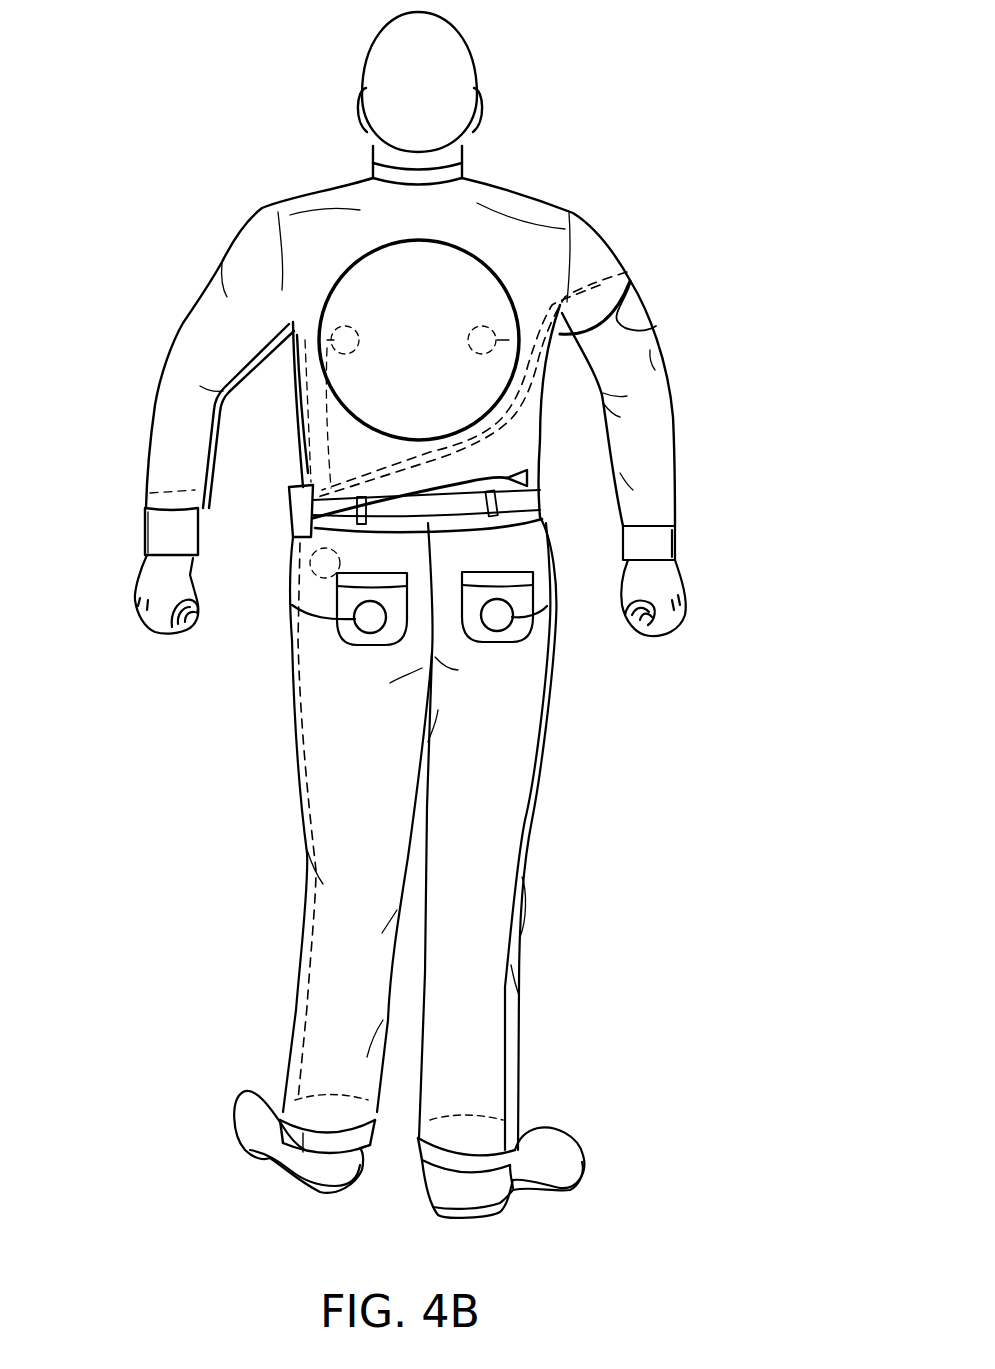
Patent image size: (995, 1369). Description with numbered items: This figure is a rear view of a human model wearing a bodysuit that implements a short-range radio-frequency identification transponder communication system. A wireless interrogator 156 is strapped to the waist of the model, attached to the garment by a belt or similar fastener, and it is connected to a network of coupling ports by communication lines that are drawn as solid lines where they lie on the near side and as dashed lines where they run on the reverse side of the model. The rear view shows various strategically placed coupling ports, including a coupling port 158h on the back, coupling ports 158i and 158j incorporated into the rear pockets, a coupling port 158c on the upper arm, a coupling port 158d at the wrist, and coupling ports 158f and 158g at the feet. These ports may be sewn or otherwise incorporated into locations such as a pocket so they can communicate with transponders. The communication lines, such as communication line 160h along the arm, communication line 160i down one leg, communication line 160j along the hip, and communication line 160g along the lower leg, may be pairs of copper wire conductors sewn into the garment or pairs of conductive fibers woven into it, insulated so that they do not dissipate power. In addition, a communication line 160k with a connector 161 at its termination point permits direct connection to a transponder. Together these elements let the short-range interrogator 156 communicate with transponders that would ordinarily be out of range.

The wireless interrogator 156 is at (294, 512).
The coupling port 158c is at (642, 326).
The coupling port 158d is at (153, 520).
The coupling port 158f is at (300, 1158).
The coupling port 158g is at (500, 1160).
The coupling port 158h is at (473, 252).
The coupling port 158i is at (367, 633).
The coupling port 158j is at (503, 640).
The communication line 160g is at (510, 1040).
The communication line 160h is at (297, 436).
The communication line 160i is at (290, 593).
The communication line 160j is at (548, 633).
The communication line 160k is at (482, 478).
The connector 161 is at (527, 479).